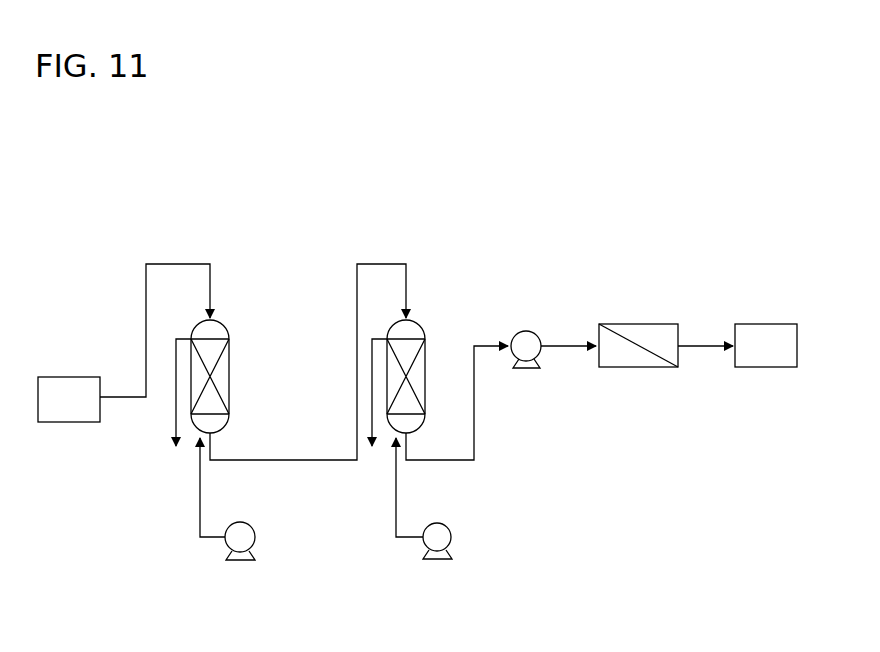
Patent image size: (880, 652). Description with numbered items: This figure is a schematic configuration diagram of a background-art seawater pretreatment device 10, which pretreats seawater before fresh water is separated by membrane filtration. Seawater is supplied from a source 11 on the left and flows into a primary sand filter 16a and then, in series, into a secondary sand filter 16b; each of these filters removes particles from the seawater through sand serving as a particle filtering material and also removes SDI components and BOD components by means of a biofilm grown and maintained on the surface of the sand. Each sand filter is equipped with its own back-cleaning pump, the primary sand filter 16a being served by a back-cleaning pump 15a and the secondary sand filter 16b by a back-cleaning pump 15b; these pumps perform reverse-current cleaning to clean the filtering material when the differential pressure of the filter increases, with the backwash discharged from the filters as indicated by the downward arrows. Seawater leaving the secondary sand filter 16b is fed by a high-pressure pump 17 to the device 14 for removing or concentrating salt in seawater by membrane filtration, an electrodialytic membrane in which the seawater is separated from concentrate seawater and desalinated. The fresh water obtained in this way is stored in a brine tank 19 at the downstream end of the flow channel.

The seawater pretreatment device 10 is at (486, 228).
The raw water tank 11 is at (44, 377).
The device for removing or concentrating salt in seawater by membrane filtration 14 is at (659, 324).
The back-cleaning pump 15a is at (256, 540).
The back-cleaning pump 15b is at (452, 540).
The primary sand filter 16a is at (228, 331).
The secondary sand filter 16b is at (424, 331).
The high-pressure pump 17 is at (537, 331).
The brine tank 19 is at (772, 324).